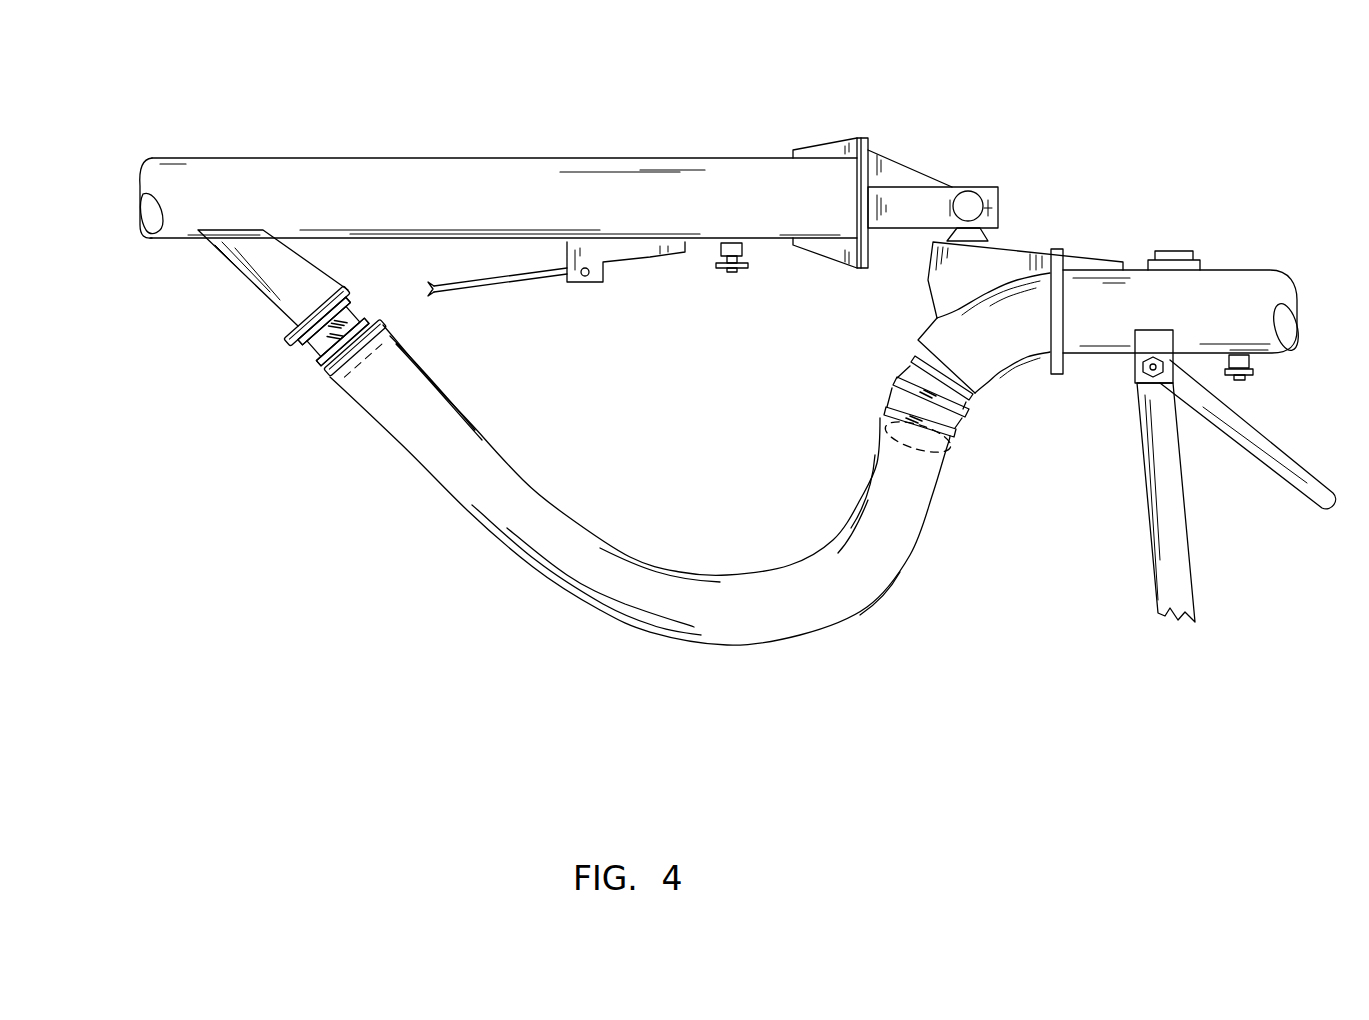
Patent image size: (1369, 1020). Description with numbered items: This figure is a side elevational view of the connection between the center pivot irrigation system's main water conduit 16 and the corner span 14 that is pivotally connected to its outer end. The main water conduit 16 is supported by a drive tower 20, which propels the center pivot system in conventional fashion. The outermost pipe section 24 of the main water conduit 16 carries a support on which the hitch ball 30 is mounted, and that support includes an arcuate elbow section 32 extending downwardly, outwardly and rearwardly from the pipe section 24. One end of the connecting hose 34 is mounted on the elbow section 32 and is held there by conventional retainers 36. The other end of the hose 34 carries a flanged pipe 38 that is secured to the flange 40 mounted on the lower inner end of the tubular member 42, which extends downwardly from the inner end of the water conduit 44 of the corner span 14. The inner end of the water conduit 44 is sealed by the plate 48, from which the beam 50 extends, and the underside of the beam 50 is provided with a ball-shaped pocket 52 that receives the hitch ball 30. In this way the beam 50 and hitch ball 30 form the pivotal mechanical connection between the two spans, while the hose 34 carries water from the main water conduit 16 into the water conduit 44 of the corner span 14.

The corner span 14 is at (627, 132).
The main water conduit 16 is at (1219, 232).
The drive tower 20 is at (1185, 553).
The outermost pipe section 24 is at (1233, 297).
The hitch ball 30 is at (932, 228).
The elbow section 32 is at (873, 415).
The connecting hose 34 is at (585, 548).
The retainers 36 is at (335, 385).
The flanged pipe 38 is at (352, 293).
The flange 40 is at (290, 338).
The tubular member 42 is at (300, 280).
The water conduit 44 is at (731, 178).
The plate 48 is at (870, 143).
The beam 50 is at (945, 198).
The ball-shaped pocket 52 is at (1003, 213).